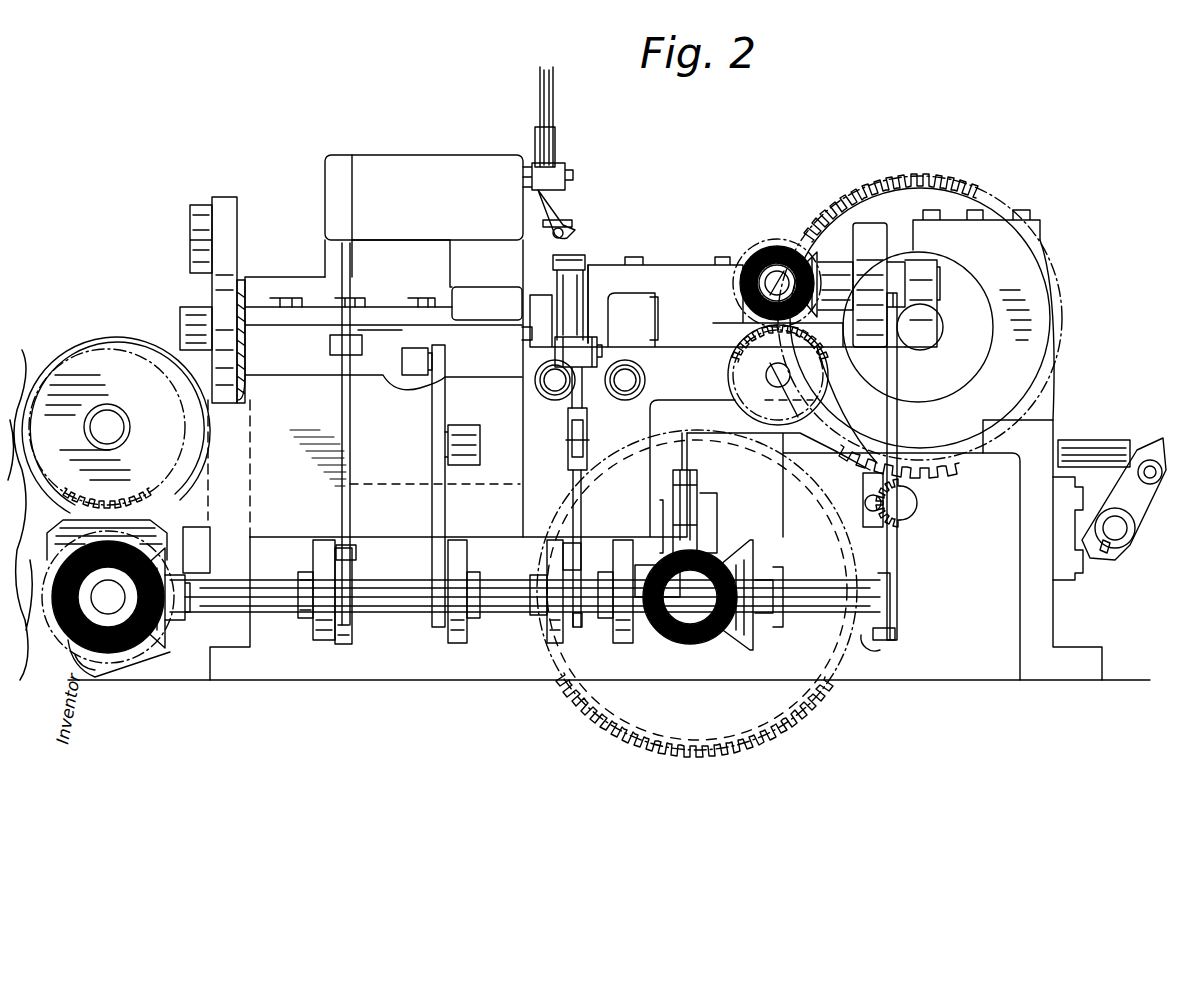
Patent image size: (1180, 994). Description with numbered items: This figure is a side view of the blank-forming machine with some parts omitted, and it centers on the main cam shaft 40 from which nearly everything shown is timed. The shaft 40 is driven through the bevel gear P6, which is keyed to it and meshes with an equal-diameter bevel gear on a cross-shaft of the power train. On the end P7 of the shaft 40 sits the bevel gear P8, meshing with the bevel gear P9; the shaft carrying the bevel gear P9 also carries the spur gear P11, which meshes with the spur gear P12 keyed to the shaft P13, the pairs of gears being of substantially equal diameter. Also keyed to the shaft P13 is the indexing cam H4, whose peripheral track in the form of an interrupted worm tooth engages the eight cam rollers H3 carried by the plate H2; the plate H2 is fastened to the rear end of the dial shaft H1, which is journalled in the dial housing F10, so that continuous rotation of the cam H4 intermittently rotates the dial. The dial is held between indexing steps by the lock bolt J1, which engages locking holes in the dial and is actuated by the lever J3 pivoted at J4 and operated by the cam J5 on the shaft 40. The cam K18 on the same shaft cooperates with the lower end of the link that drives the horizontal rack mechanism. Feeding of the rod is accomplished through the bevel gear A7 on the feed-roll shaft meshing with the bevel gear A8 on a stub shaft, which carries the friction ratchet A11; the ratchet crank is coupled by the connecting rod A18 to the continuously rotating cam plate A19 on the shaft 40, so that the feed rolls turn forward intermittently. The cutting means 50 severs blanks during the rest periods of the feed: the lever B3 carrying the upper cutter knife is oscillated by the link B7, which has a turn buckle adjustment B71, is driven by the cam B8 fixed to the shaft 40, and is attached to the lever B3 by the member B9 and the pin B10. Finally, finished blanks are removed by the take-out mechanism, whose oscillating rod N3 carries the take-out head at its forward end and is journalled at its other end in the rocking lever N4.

The dial housing F10 is at (425, 185).
The plate H2 is at (228, 200).
The cam rollers H3 is at (190, 222).
The dial shaft H1 is at (242, 290).
The cam H4 is at (128, 335).
The spur gear P12 is at (75, 352).
The shaft P13 is at (126, 427).
The bevel gear P9 is at (135, 650).
The bevel gear P8 is at (165, 650).
The spur gear P11 is at (92, 680).
The main cam shaft 40 is at (382, 600).
The cam K18 is at (320, 640).
The lock bolt J1 is at (400, 350).
The lever J3 is at (430, 510).
The pivot J4 is at (478, 452).
The cam J5 is at (470, 642).
The cutting means 50 is at (580, 247).
The lever B3 is at (590, 272).
The pin B10 is at (612, 352).
The member B9 is at (600, 365).
The turn buckle adjustment B71 is at (578, 442).
The link B7 is at (583, 503).
The cam B8 is at (580, 630).
The end of shaft P7 is at (682, 645).
The bevel gear P6 is at (742, 645).
The bevel gear A7 is at (762, 250).
The bevel gear A8 is at (793, 270).
The friction ratchet A11 is at (881, 212).
The connecting rod A18 is at (900, 548).
The cam plate A19 is at (884, 650).
The oscillating rod N3 is at (1092, 455).
The rocking lever N4 is at (1145, 540).